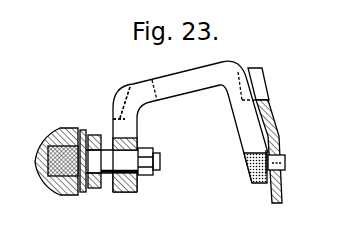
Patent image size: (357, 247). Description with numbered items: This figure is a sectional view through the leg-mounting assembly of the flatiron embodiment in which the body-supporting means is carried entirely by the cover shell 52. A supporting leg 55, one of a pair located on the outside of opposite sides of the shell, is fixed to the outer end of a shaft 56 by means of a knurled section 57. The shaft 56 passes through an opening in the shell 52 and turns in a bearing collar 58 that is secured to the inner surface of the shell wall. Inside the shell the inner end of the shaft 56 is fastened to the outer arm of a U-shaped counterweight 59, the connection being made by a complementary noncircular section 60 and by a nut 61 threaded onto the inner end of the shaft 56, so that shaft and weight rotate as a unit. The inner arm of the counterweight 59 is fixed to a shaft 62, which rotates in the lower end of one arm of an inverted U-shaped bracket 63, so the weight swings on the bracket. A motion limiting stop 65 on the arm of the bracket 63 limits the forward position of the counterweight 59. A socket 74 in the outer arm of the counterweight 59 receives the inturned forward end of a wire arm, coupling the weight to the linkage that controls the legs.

The cover shell 52 is at (85, 131).
The supporting leg 55 is at (53, 133).
The shaft 56 is at (110, 186).
The knurled section 57 is at (54, 192).
The bearing collar 58 is at (99, 135).
The U-shaped counterweight 59 is at (221, 64).
The noncircular section 60 is at (133, 140).
The nut 61 is at (147, 177).
The shaft 62 is at (284, 157).
The inverted U-shaped bracket 63 is at (277, 118).
The motion limiting stop 65 is at (247, 70).
The socket 74 is at (128, 87).